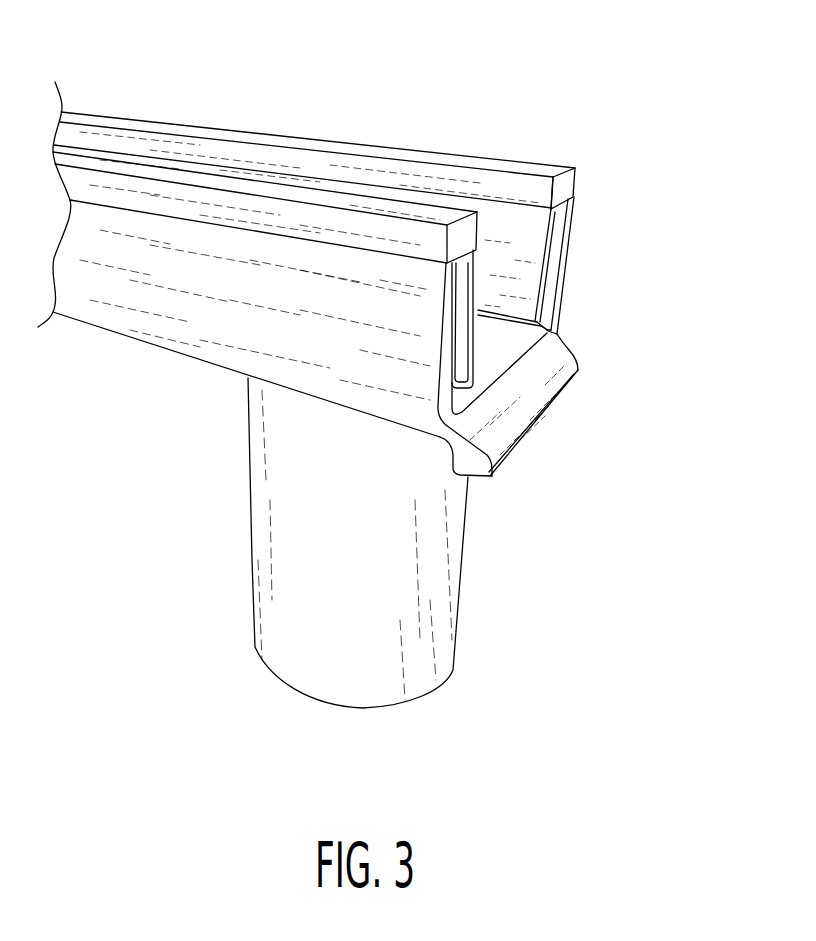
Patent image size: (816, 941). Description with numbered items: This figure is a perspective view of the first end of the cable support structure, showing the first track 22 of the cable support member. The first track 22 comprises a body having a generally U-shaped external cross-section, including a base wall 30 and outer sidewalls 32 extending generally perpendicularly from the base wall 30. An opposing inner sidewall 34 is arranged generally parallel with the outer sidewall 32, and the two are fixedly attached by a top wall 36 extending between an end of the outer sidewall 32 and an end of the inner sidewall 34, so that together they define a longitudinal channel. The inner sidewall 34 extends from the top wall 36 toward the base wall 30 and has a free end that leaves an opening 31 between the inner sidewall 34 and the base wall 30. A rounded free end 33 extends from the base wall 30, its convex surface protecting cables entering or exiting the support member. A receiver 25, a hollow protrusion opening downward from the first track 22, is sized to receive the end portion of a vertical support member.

The first track 22 is at (348, 108).
The top wall 36 is at (533, 188).
The inner sidewall 34 is at (510, 237).
The opening 31 is at (548, 330).
The base wall 30 is at (503, 353).
The rounded free end 33 is at (522, 423).
The outer sidewall 32 is at (257, 333).
The receiver 25 is at (430, 620).